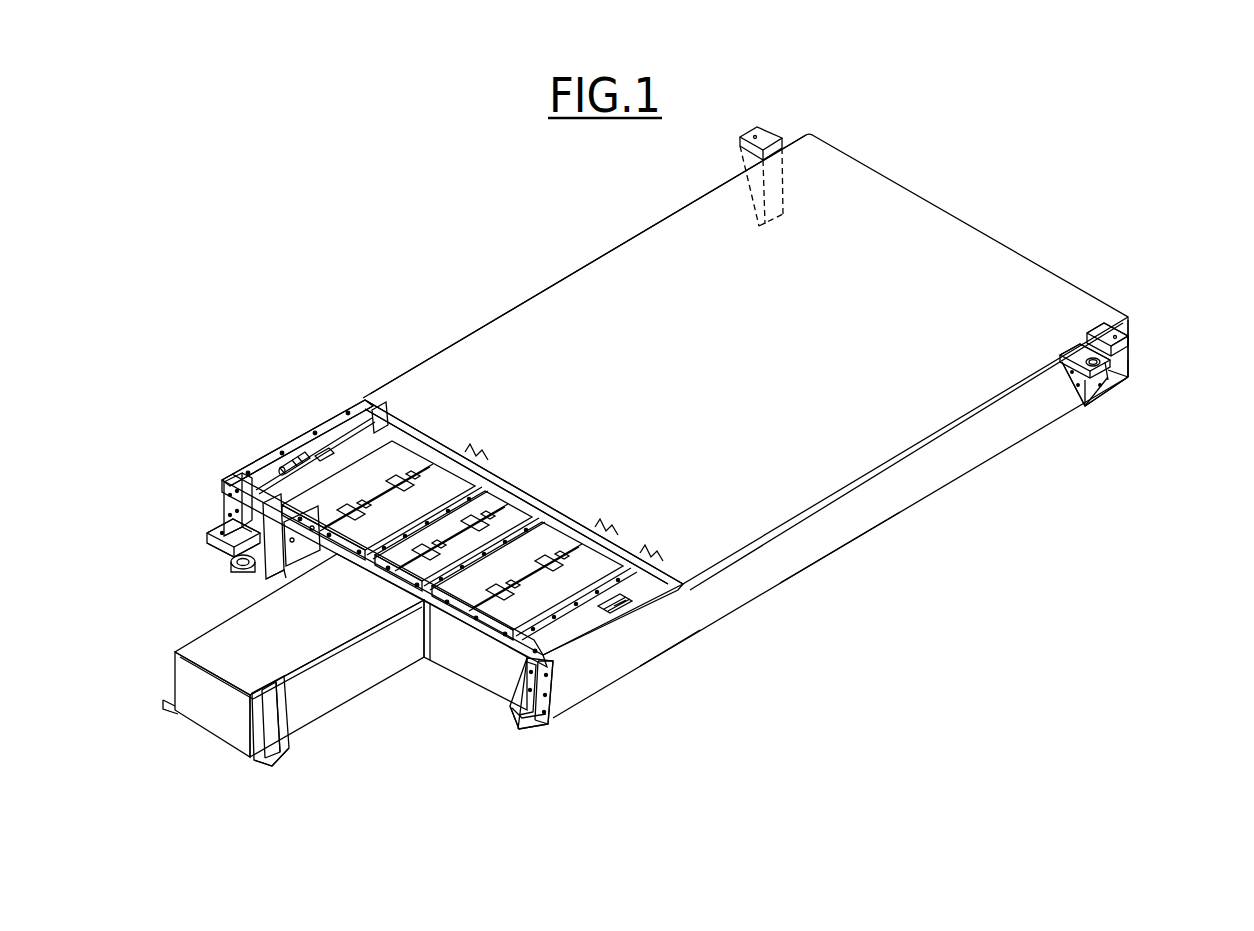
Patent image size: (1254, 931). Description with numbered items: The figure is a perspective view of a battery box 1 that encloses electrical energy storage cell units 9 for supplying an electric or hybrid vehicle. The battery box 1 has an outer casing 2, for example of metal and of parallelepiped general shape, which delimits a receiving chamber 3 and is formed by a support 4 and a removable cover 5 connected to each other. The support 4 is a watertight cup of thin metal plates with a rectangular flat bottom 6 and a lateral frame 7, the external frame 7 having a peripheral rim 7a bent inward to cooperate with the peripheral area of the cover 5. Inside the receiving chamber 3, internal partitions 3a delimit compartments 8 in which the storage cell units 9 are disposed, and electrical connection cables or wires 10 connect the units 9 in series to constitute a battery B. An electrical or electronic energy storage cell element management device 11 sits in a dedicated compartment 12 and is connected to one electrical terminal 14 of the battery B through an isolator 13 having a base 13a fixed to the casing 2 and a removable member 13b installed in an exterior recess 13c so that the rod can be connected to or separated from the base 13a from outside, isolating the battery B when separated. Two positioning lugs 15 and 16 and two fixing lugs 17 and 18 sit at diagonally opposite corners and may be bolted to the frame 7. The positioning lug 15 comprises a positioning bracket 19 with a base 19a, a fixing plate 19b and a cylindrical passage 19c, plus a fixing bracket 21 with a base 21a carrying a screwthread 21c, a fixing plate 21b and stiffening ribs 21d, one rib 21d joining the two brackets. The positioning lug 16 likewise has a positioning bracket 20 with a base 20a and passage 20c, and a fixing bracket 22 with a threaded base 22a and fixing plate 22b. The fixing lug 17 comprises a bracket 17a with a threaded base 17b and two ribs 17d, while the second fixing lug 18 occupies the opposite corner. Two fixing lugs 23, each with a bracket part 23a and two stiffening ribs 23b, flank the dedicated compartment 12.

The battery box 1 is at (438, 270).
The battery B is at (387, 398).
The outer casing 2 is at (959, 246).
The receiving chamber 3 is at (340, 398).
The internal partitions 3a is at (488, 478).
The support 4 is at (838, 562).
The removable cover 5 is at (653, 337).
The rectangular flat bottom 6 is at (658, 660).
The lateral frame 7 is at (948, 455).
The peripheral rim 7a is at (237, 472).
The compartments 8 is at (258, 477).
The storage cell units 9 is at (397, 485).
The electrical connection cables or wires 10 is at (278, 470).
The energy storage cell element management device 11 is at (190, 742).
The dedicated compartment 12 is at (338, 685).
The isolator 13 is at (289, 602).
The base 13a is at (273, 478).
The removable member 13b is at (300, 565).
The exterior recess 13c is at (270, 572).
The electrical terminal 14 is at (337, 436).
The positioning lug 15 is at (1097, 418).
The positioning lug 16 is at (223, 577).
The fixing lug 17 is at (528, 748).
The bracket 17a is at (522, 700).
The base 17b is at (505, 718).
The ribs 17d is at (545, 712).
The second fixing lug 18 is at (748, 125).
The positioning bracket 19 is at (1058, 361).
The base 19a is at (1073, 355).
The fixing plate 19b is at (1068, 372).
The passage 19c is at (1088, 357).
The positioning bracket 20 is at (229, 582).
The base 20a is at (213, 543).
The passage 20c is at (212, 563).
The fixing bracket 21 is at (1135, 340).
The base 21a is at (1100, 332).
The fixing plate 21b is at (1120, 393).
The screwthread 21c is at (1114, 335).
The ribs 21d is at (1118, 375).
The fixing bracket 22 is at (207, 530).
The base 22a is at (210, 532).
The fixing plate 22b is at (212, 519).
The fixing lugs 23 is at (155, 700).
The bracket part 23a is at (273, 737).
The ribs 23b is at (262, 752).